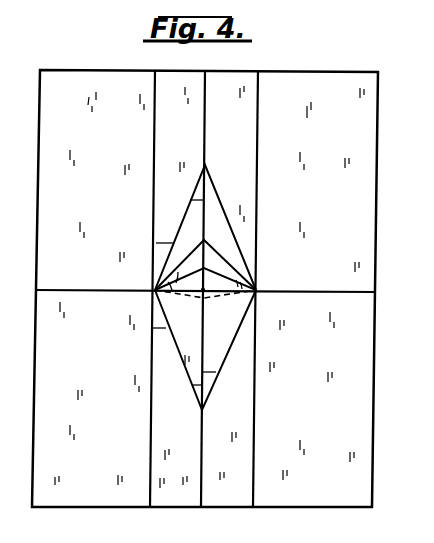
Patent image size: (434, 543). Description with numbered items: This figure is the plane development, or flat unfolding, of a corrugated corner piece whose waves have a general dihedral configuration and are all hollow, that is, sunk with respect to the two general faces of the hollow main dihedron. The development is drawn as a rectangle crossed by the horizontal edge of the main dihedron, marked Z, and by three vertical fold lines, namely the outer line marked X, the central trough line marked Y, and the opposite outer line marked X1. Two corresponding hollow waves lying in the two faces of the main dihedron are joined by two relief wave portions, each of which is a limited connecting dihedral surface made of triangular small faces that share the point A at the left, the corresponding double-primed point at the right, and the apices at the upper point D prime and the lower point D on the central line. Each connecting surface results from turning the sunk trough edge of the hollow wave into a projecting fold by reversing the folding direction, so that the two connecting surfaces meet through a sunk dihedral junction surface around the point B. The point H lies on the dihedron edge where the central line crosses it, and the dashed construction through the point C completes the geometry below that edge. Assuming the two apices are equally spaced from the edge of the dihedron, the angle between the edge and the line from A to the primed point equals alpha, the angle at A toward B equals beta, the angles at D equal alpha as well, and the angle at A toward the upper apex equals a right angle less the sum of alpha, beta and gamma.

The wave fold line X is at (141, 288).
The trough edge line Y is at (213, 288).
The wave fold line X1 is at (265, 290).
The edge of the main dihedron Z is at (205, 280).
The vertex of connecting dihedral surfaces A is at (205, 284).
The apex of junction surface B is at (205, 261).
The point C (dashed construction) C is at (205, 304).
The apex of hollow wave D is at (205, 287).
The point on the dihedron edge H is at (209, 287).